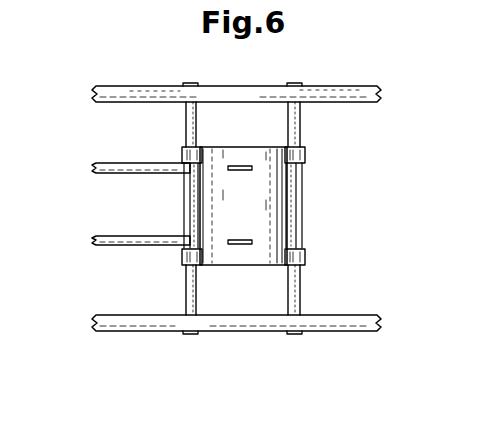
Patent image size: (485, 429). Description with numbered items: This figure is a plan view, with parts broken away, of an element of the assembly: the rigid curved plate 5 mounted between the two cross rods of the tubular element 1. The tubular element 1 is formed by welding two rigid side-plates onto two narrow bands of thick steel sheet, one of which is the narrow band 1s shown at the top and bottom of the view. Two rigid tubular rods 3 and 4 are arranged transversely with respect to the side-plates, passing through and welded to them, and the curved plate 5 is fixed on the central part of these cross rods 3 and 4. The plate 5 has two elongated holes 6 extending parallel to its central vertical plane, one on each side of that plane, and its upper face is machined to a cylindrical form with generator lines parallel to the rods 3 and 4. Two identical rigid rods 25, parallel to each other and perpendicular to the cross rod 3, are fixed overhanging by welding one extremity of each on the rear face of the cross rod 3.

The tubular element 1 is at (350, 88).
The narrow band 1s is at (141, 96).
The tubular rod 3 is at (186, 119).
The tubular rod 4 is at (295, 120).
The curved plate 5 is at (283, 219).
The elongated hole 6 is at (240, 171).
The rigid rod 25 is at (122, 170).